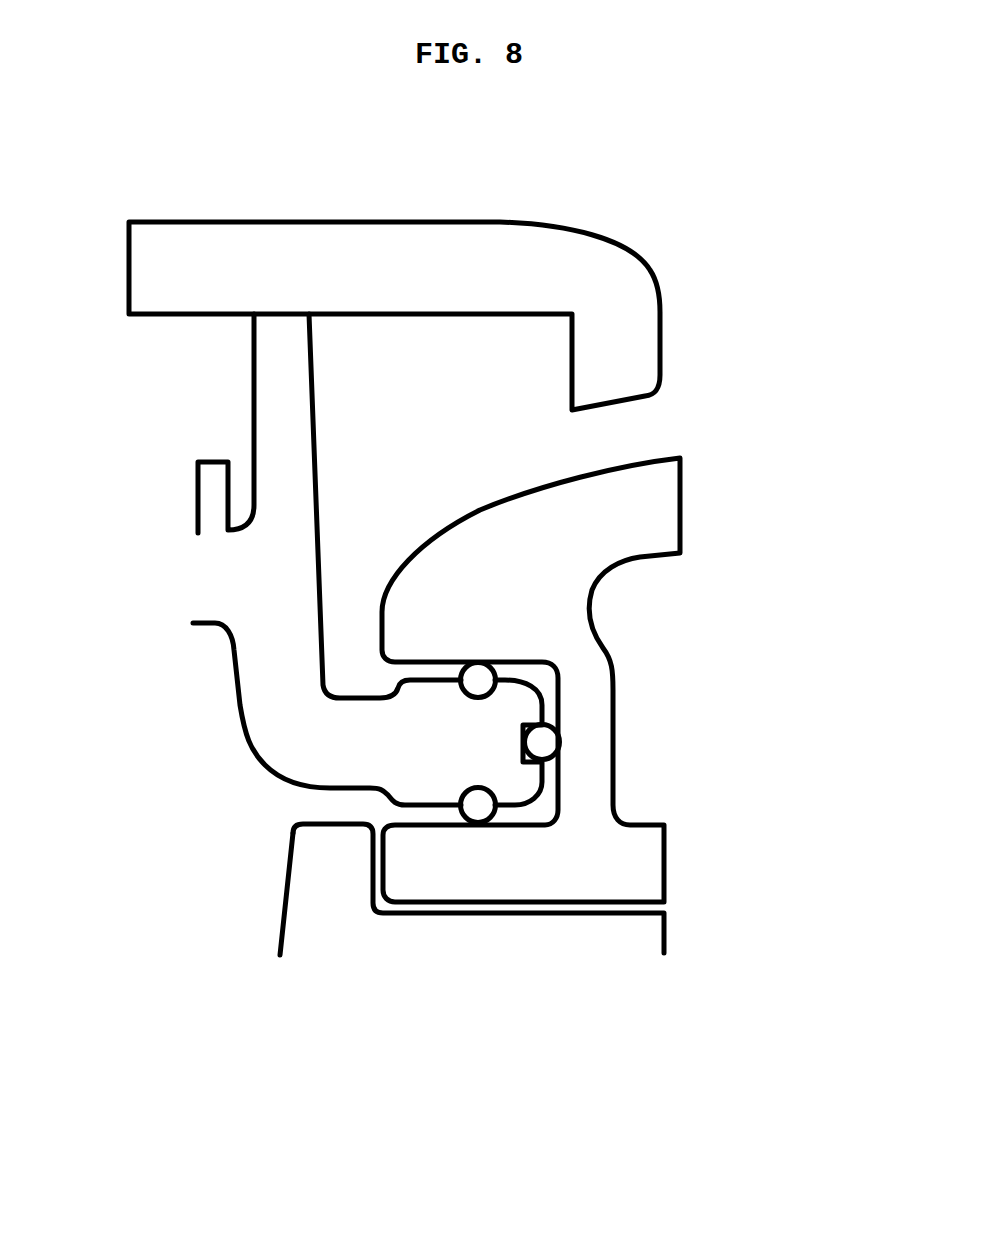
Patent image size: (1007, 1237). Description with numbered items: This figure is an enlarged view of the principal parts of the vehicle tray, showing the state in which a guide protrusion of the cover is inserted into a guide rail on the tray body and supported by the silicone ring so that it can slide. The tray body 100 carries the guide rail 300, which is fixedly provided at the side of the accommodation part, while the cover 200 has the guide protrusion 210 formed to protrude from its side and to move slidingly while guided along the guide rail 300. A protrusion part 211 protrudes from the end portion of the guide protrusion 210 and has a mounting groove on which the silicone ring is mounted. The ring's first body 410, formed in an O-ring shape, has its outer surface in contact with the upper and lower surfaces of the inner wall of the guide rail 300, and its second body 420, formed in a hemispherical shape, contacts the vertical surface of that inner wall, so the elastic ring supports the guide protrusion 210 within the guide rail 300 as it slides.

The tray body 100 is at (463, 933).
The cover 200 is at (455, 253).
The guide protrusion 210 is at (272, 728).
The protrusion part 211 is at (543, 809).
The guide rail 300 is at (555, 573).
The first body 410 is at (475, 813).
The second body 420 is at (547, 737).